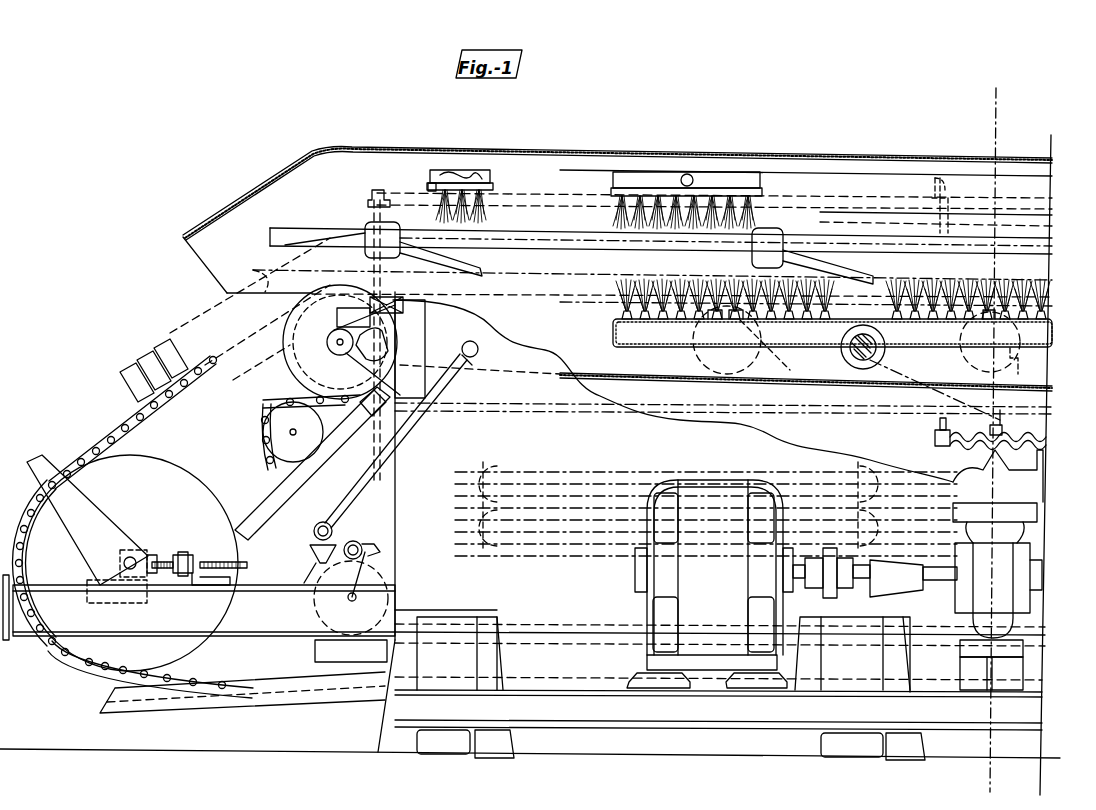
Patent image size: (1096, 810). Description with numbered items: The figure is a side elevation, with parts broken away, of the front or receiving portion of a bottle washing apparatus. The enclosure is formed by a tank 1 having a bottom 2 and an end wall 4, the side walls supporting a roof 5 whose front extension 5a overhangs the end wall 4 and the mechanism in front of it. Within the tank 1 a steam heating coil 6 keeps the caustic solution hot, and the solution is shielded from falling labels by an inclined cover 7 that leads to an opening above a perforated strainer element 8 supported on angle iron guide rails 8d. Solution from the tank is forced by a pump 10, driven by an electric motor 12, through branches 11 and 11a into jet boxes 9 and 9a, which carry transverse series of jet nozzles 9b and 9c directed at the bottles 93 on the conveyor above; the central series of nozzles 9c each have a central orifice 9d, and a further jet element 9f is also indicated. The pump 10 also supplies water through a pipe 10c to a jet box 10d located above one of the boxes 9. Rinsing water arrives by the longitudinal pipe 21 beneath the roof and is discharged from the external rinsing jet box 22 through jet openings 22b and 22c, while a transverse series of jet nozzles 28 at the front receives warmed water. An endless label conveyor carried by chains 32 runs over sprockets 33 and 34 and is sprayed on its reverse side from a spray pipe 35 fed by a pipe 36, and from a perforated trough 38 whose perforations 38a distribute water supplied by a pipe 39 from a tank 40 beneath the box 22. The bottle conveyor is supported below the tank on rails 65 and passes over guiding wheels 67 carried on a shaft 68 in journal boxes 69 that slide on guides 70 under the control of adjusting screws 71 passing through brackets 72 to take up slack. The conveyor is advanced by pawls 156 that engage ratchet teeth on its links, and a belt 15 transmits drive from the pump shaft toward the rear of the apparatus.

The tank 1 is at (719, 469).
The bottom 2 is at (1012, 105).
The end wall 4 is at (312, 463).
The roof 5 is at (643, 150).
The roof extension 5a is at (227, 212).
The heating coil 6 is at (642, 472).
The cover 7 is at (640, 348).
The perforated strainer element 8 is at (726, 407).
The angle iron guide rails 8d is at (939, 438).
The jet box 9 is at (782, 338).
The jet box 9a is at (1030, 392).
The jet nozzles 9b is at (786, 345).
The jet nozzles 9c is at (741, 340).
The central orifice 9d is at (942, 340).
The brush cup 9f is at (990, 341).
The pump 10 is at (918, 570).
The pipe 10c is at (822, 178).
The jet box 10d is at (735, 178).
The branch 11 is at (723, 423).
The branch 11a is at (1020, 420).
The electric motor 12 is at (710, 584).
The belt 15 is at (604, 244).
The pawls 156 is at (484, 270).
The pipe 21 is at (1027, 190).
The external rinsing jet box 22 is at (457, 170).
The jet openings 22b is at (428, 188).
The jet openings 22c is at (610, 190).
The jet nozzles 28 is at (354, 342).
The conveyor chains 32 is at (265, 404).
The sprocket 33 is at (293, 432).
The sprocket 34 is at (351, 593).
The spray pipe 35 is at (333, 536).
The pipe 36 is at (360, 550).
The trough 38 is at (308, 558).
The perforations 38a is at (312, 566).
The pipe 39 is at (350, 500).
The tank 40 is at (476, 340).
The rails 65 is at (198, 700).
The guiding and supporting wheels 67 is at (130, 563).
The shaft 68 is at (134, 560).
The journal boxes 69 is at (164, 555).
The guides 70 is at (199, 607).
The adjusting screws 71 is at (240, 570).
The brackets 72 is at (200, 562).
The bottles 93 is at (142, 362).